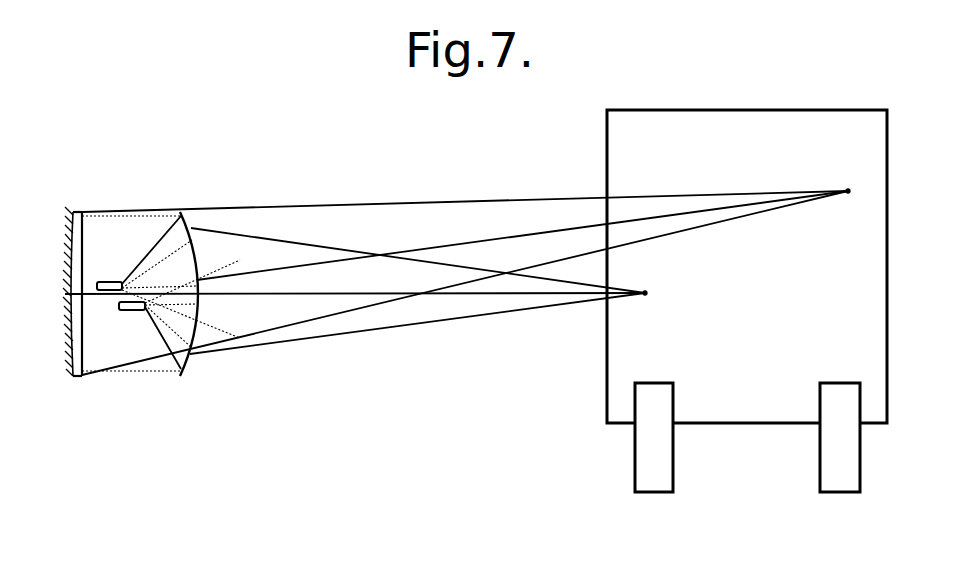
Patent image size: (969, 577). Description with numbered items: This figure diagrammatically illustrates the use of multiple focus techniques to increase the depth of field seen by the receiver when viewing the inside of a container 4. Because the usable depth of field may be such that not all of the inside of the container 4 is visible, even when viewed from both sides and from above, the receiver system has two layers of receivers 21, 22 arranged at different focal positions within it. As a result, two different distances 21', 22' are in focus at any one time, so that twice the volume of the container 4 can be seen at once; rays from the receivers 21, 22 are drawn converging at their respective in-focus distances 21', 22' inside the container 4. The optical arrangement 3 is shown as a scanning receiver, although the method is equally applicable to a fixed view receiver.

The optical head (mirror and lens assembly) 3 is at (183, 192).
The container 4 is at (827, 109).
The receiver 21 is at (102, 228).
The receiver 22 is at (118, 360).
The in-focus distance 21' is at (675, 315).
The in-focus distance 22' is at (824, 222).